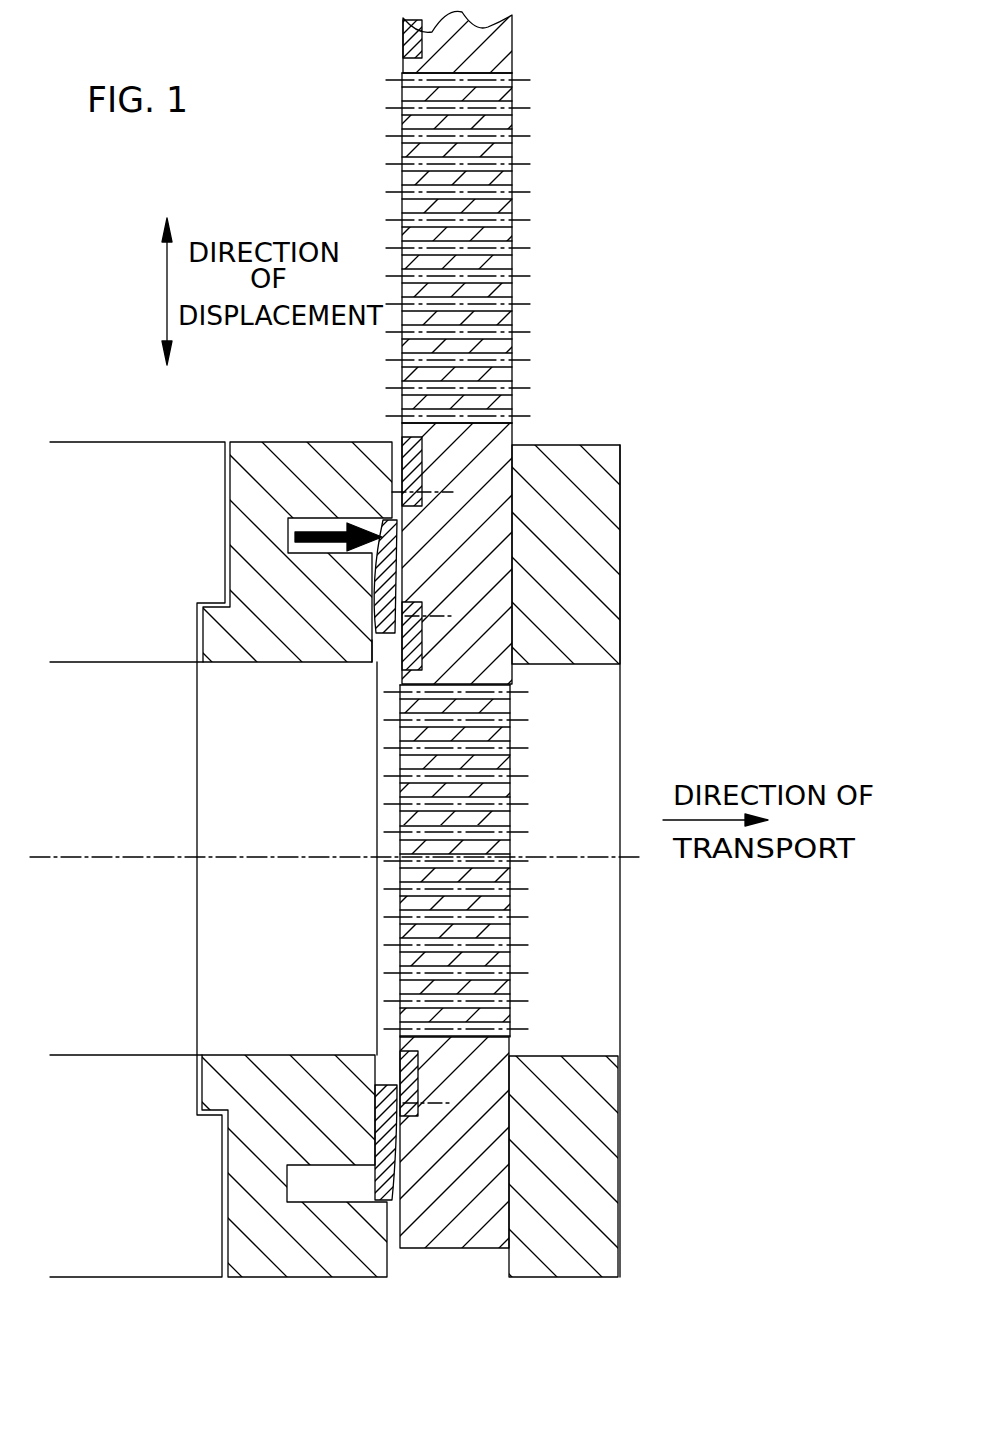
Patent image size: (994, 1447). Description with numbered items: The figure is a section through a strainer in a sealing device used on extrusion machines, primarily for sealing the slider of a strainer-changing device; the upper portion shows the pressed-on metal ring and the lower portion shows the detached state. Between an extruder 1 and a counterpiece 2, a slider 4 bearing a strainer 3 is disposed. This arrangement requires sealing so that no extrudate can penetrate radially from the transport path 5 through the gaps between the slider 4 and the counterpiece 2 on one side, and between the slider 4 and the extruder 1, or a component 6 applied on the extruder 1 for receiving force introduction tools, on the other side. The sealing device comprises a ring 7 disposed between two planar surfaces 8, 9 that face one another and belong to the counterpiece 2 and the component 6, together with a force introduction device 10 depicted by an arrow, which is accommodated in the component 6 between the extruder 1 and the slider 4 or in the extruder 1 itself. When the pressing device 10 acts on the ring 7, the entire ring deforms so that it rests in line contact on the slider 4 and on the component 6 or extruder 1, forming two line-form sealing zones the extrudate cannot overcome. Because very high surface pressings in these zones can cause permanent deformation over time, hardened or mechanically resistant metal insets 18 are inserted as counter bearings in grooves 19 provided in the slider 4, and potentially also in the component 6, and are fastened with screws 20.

The extruder 1 is at (138, 1213).
The counterpiece 2 is at (550, 1233).
The strainer 3 is at (470, 830).
The slider 4 is at (452, 1198).
The transport path 5 is at (570, 914).
The component 6 is at (272, 1232).
The ring 7 is at (383, 1168).
The planar surface 8 is at (420, 642).
The planar surface 9 is at (378, 650).
The force introduction device 10 is at (320, 1182).
The metal insets 18 is at (407, 1063).
The grooves 19 is at (417, 1087).
The screws 20 is at (440, 1103).